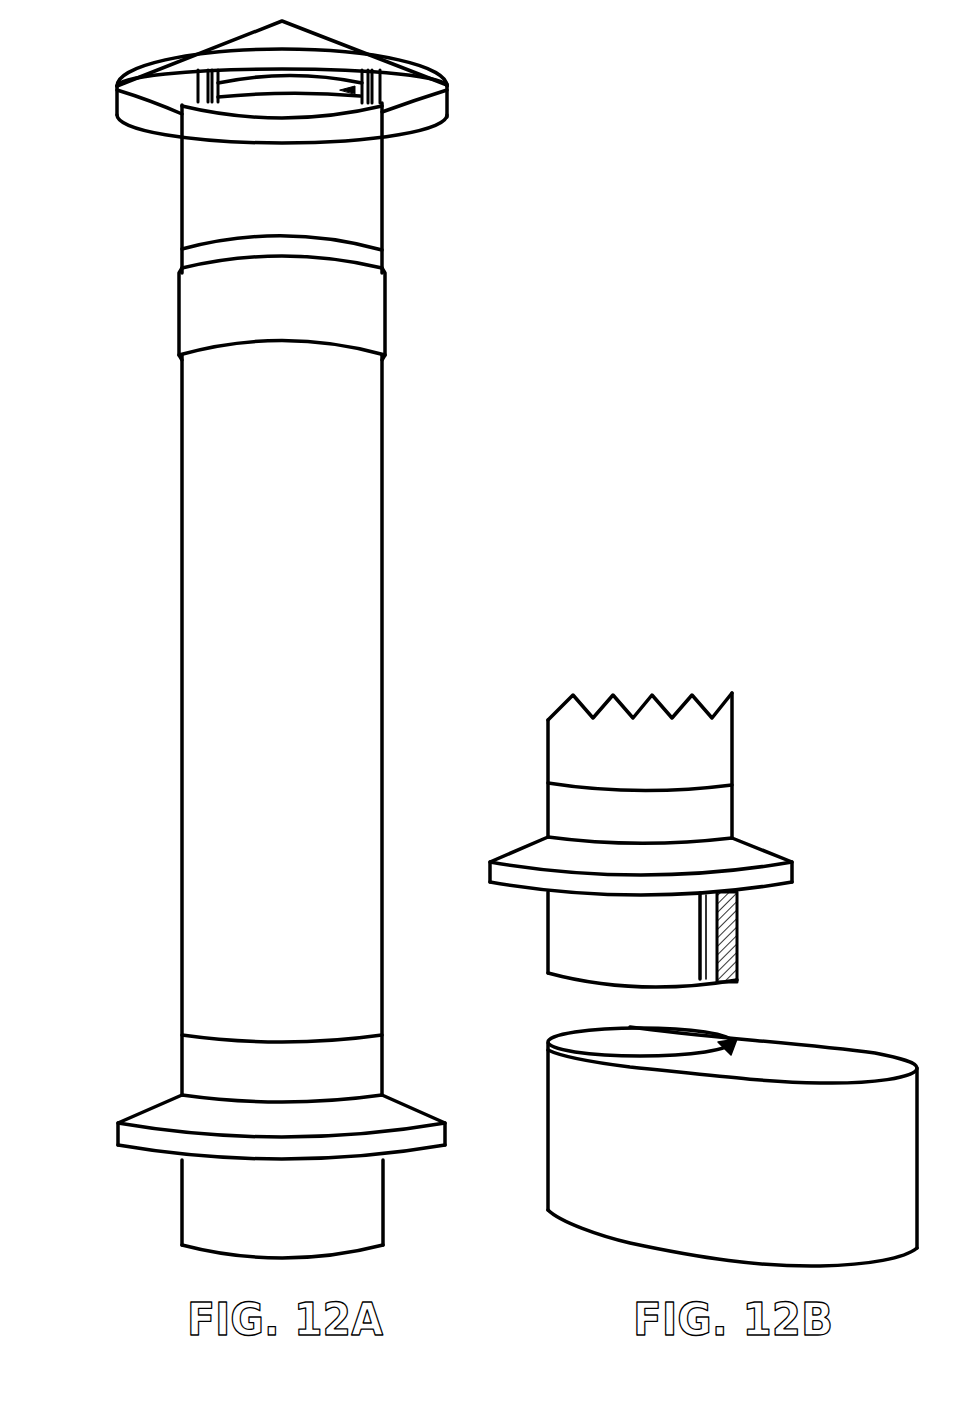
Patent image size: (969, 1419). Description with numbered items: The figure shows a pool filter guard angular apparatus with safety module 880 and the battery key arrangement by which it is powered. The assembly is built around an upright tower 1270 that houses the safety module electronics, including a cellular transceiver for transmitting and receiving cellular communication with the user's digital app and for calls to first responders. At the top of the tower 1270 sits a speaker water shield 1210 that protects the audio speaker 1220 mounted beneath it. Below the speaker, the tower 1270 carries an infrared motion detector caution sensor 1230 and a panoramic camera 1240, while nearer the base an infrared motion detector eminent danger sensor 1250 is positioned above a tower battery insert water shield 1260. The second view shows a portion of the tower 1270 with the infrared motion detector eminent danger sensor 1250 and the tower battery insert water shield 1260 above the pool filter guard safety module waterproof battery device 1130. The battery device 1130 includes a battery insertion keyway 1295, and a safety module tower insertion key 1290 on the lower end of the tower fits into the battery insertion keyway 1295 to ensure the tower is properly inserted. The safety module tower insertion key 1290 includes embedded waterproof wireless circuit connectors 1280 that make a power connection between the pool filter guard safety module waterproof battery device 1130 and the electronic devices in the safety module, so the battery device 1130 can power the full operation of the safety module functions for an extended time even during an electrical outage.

In FIG. 12A, the pool filter guard angular apparatus with safety module 880 is at (146, 391).
In FIG. 12A, the speaker water shield 1210 is at (447, 84).
In FIG. 12A, the audio speaker 1220 is at (382, 95).
In FIG. 12A, the infrared motion detector caution sensor 1230 is at (195, 215).
In FIG. 12A, the panoramic camera 1240 is at (193, 305).
In FIG. 12A, the tower 1270 is at (182, 652).
In FIG. 12B, the tower 1270 is at (733, 743).
In FIG. 12A, the infrared motion detector eminent danger sensor 1250 is at (198, 1070).
In FIG. 12B, the infrared motion detector eminent danger sensor 1250 is at (715, 822).
In FIG. 12A, the tower battery insert water shield 1260 is at (145, 1117).
In FIG. 12B, the tower battery insert water shield 1260 is at (788, 877).
In FIG. 12B, the embedded waterproof wireless circuit connectors 1280 is at (737, 948).
In FIG. 12B, the safety module tower insertion key 1290 is at (710, 967).
In FIG. 12B, the battery insertion keyway 1295 is at (728, 1047).
In FIG. 12B, the pool filter guard safety module waterproof battery device 1130 is at (865, 1063).